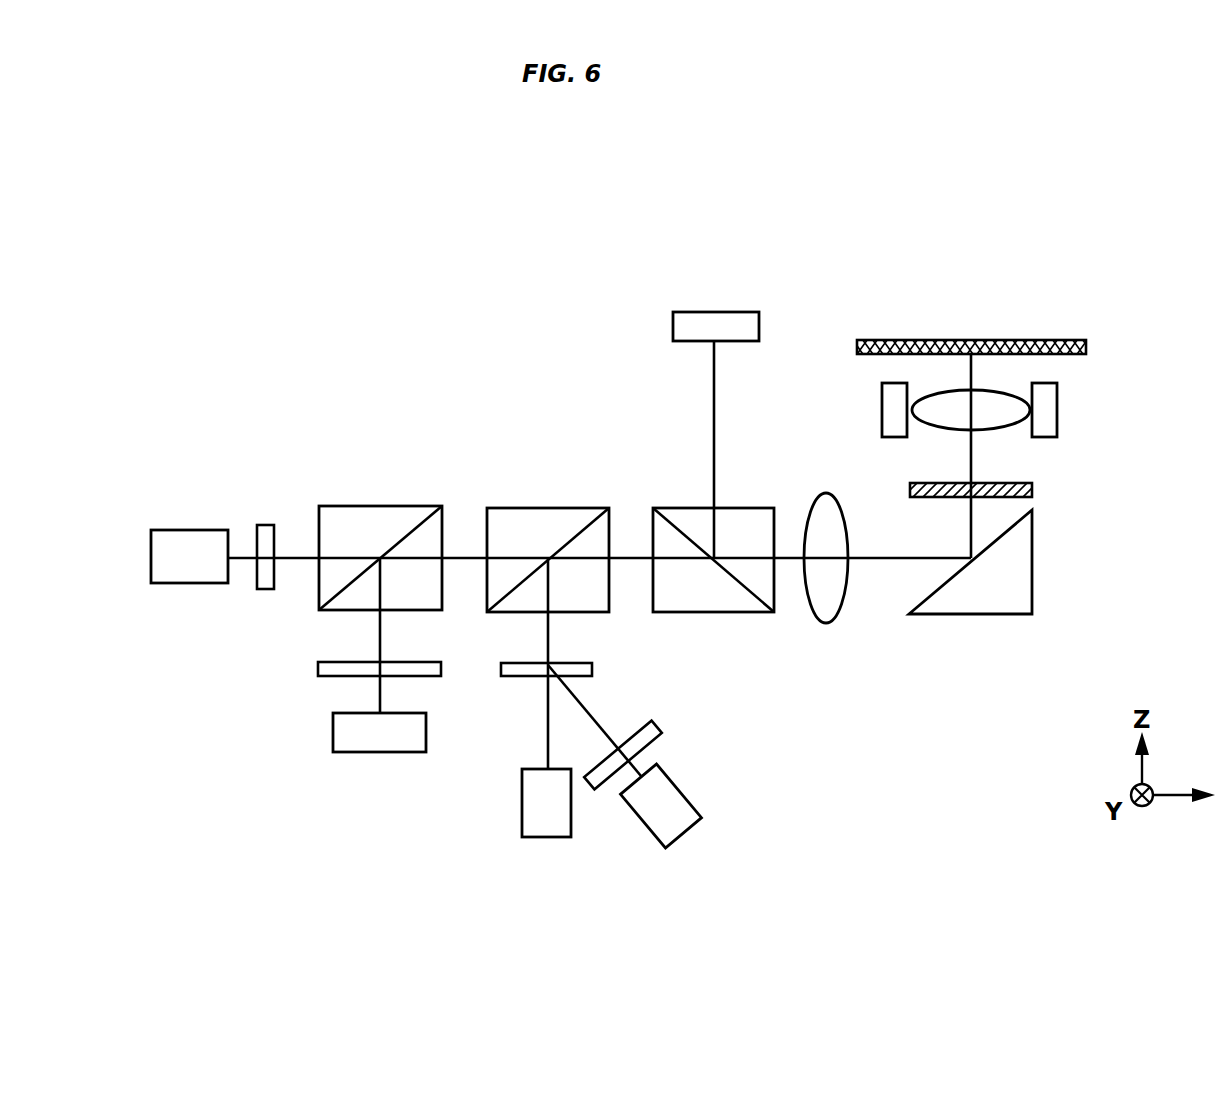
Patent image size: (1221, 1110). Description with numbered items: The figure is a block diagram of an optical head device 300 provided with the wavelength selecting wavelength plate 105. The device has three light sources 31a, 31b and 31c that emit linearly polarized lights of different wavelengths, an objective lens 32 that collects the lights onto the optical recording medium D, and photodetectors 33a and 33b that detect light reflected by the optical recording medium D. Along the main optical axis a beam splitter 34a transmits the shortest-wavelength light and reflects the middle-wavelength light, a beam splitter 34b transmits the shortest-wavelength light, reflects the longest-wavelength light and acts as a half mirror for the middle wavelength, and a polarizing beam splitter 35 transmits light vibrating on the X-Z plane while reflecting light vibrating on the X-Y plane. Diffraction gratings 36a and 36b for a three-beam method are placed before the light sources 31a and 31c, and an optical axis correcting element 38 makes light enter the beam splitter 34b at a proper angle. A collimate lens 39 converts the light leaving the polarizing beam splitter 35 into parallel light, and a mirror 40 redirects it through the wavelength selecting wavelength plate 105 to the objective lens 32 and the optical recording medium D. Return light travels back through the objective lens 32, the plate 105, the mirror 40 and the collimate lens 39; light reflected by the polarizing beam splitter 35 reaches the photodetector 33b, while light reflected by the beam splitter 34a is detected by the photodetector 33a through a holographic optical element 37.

The optical head device 300 is at (1144, 233).
The light source 31a is at (190, 530).
The light source 31b is at (522, 808).
The light source 31c is at (687, 807).
The objective lens 32 is at (993, 400).
The photodetector 33a is at (333, 735).
The photodetector 33b is at (727, 312).
The beam splitter 34a is at (370, 506).
The beam splitter 34b is at (540, 508).
The polarizing beam splitter 35 is at (676, 508).
The diffraction grating 36a is at (268, 525).
The diffraction grating 36b is at (665, 737).
The holographic optical element 37 is at (318, 668).
The optical axis correcting element 38 is at (592, 670).
The collimate lens 39 is at (822, 497).
The mirror 40 is at (1032, 583).
The wavelength selecting wavelength plate 105 is at (1032, 491).
The optical recording medium D is at (1033, 340).